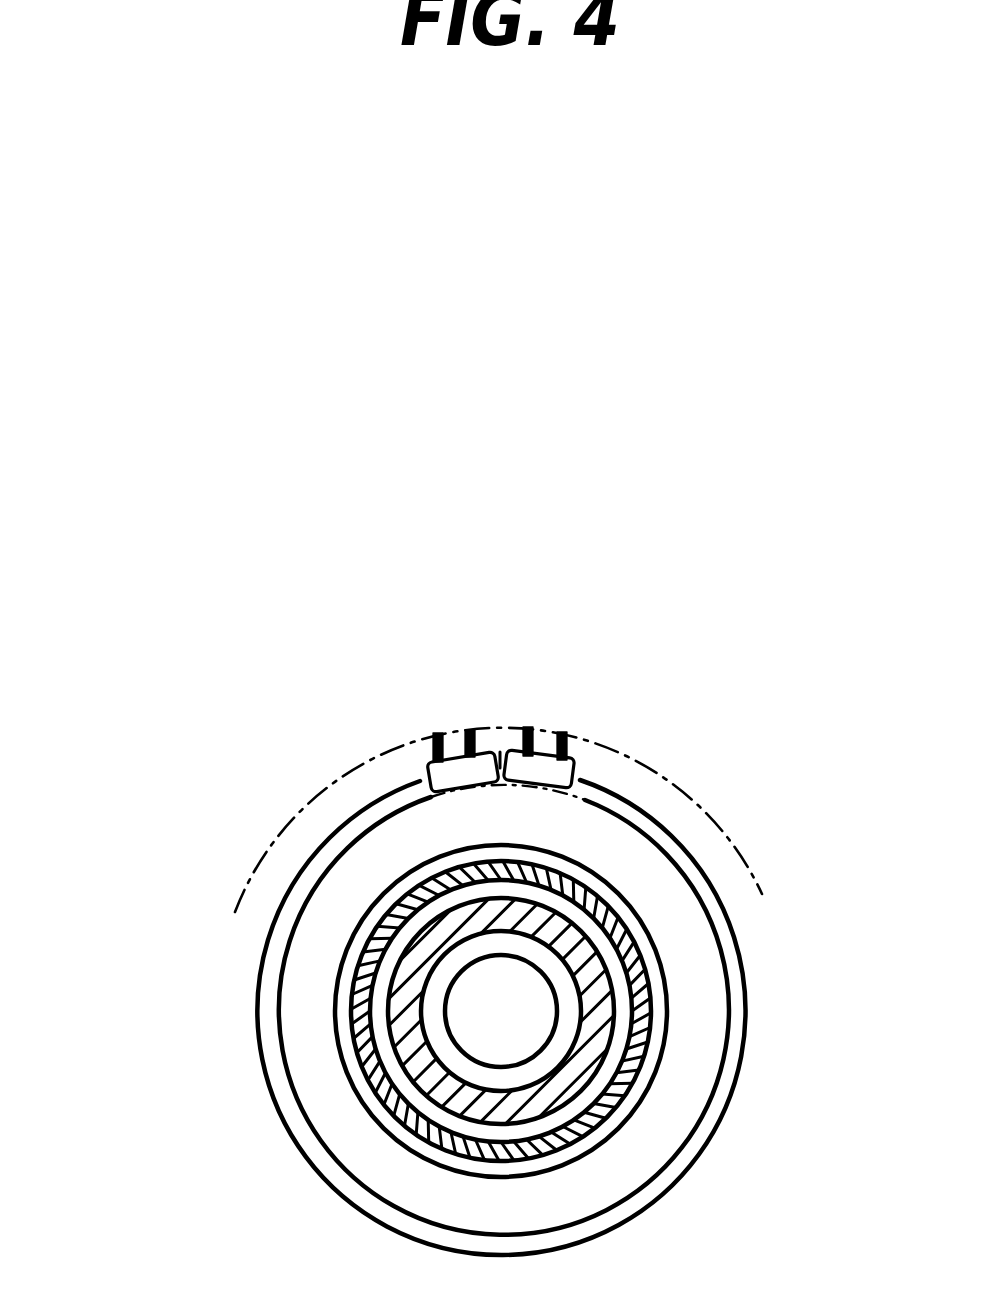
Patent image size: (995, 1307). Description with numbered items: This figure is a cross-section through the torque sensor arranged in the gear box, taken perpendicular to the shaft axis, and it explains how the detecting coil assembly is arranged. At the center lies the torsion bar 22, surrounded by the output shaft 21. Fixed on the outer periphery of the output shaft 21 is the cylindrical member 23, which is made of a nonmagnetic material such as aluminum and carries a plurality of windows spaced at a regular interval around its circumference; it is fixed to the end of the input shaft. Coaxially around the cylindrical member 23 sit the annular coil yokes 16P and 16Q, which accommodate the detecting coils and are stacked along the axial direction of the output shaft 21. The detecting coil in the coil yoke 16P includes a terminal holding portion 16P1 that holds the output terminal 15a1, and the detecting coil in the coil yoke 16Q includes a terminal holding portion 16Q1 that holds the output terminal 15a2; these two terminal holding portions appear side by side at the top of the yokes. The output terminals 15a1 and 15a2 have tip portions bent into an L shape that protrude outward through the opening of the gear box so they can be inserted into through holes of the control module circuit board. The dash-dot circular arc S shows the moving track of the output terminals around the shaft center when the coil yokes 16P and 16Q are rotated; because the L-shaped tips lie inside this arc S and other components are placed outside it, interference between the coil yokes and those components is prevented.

The circular arc S is at (252, 879).
The coil yoke 16P is at (323, 1093).
The coil yoke 16Q is at (393, 1010).
The terminal holding portion 16P1 is at (442, 778).
The terminal holding portion 16Q1 is at (573, 775).
The output terminal 15a1 is at (470, 730).
The output terminal 15a2 is at (528, 727).
The output shaft 21 is at (570, 943).
The torsion bar 22 is at (538, 1018).
The cylindrical member 23 is at (622, 1120).